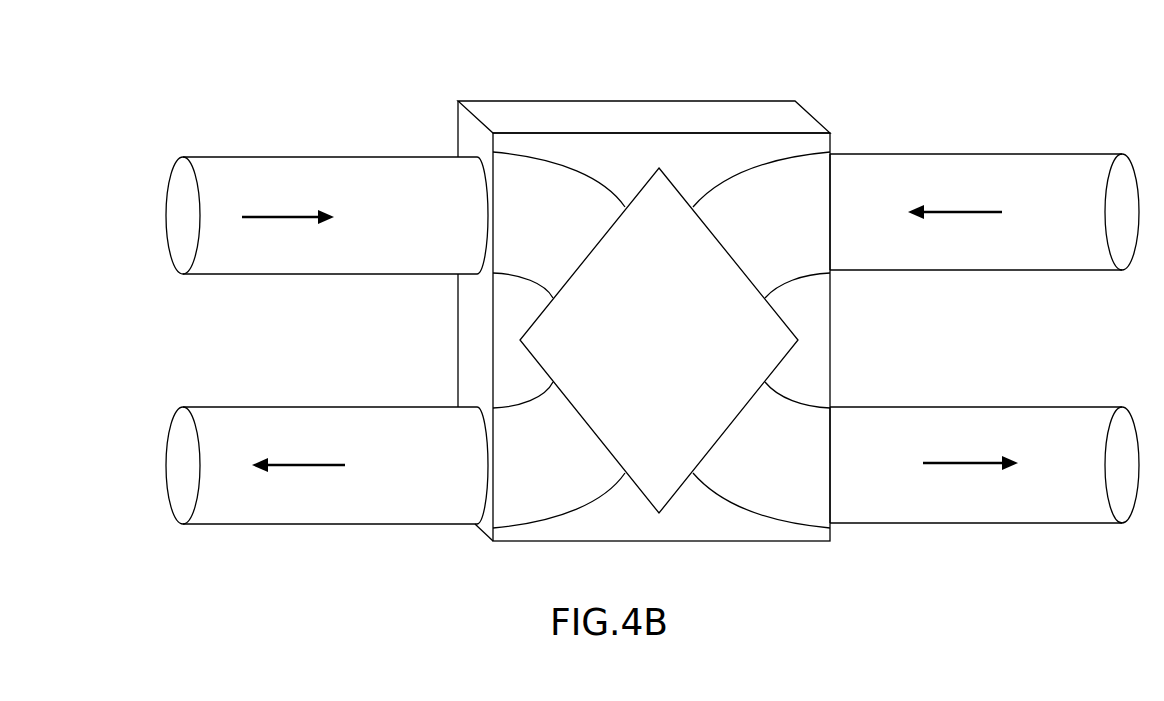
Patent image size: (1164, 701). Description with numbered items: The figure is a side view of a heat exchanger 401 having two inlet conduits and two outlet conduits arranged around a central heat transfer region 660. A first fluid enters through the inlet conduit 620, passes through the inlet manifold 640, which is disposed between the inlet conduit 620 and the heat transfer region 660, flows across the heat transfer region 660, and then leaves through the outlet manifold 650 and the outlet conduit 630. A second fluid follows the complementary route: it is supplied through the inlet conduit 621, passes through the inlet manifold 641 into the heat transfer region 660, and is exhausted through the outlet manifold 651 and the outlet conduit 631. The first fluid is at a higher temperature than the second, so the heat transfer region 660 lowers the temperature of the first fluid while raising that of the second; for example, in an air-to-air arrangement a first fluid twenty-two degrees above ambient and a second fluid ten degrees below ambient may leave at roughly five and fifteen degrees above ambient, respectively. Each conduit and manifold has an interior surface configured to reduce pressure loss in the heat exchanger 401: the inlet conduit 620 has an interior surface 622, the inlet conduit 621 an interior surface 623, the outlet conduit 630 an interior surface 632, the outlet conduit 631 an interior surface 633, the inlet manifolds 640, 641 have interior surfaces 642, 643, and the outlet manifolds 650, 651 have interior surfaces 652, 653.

The heat exchanger 401 is at (540, 108).
The inlet conduit 620 is at (283, 157).
The inlet conduit 621 is at (965, 156).
The interior surface 622 is at (386, 275).
The interior surface 623 is at (873, 270).
The outlet conduit 630 is at (962, 407).
The outlet conduit 631 is at (300, 407).
The interior surface 632 is at (910, 523).
The interior surface 633 is at (450, 524).
The inlet manifold 640 is at (549, 226).
The inlet manifold 641 is at (784, 216).
The interior surface 642 is at (537, 278).
The interior surface 643 is at (786, 278).
The outlet manifold 650 is at (779, 484).
The outlet manifold 651 is at (544, 474).
The interior surface 652 is at (787, 402).
The interior surface 653 is at (537, 402).
The heat transfer region 660 is at (677, 369).